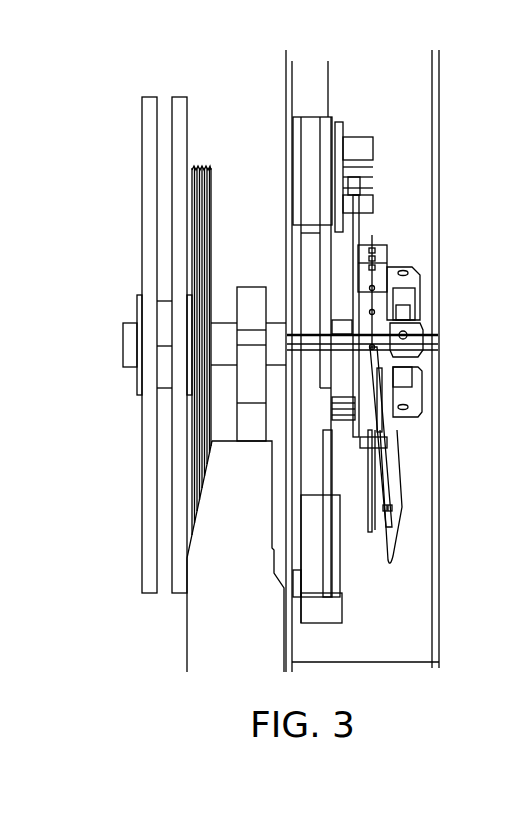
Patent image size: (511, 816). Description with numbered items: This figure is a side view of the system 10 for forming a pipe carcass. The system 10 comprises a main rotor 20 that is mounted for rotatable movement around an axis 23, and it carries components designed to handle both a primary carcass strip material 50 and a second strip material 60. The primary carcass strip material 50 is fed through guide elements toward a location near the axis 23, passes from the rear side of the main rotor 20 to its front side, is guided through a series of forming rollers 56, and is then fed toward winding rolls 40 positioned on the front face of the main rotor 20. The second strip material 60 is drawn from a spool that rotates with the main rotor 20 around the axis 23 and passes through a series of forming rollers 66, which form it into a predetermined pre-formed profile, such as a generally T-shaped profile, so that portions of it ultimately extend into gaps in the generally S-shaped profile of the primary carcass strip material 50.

The system for forming a pipe carcass 10 is at (212, 87).
The main rotor 20 is at (300, 82).
The axis 23 is at (124, 350).
The forming rollers 56 is at (363, 147).
The forming rollers 66 is at (380, 253).
The winding rolls 40 is at (400, 295).
The second strip material 60 is at (397, 452).
The primary carcass strip material 50 is at (402, 497).